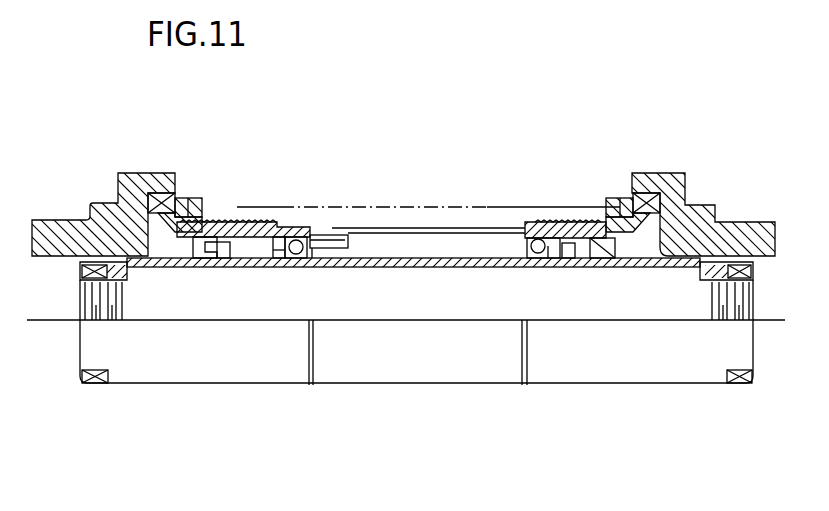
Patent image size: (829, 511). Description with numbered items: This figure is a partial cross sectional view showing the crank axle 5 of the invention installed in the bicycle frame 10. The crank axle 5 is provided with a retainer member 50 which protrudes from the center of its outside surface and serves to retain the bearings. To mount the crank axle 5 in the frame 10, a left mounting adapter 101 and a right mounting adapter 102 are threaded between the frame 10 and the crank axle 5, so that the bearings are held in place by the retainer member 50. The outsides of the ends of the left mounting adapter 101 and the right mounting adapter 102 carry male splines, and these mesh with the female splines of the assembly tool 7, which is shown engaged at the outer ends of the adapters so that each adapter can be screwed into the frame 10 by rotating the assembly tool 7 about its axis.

The crank axle 5 is at (243, 383).
The assembly tool 7 is at (745, 230).
The bicycle frame 10 is at (411, 213).
The retainer member 50 is at (310, 387).
The left mounting adapter 101 is at (222, 226).
The right mounting adapter 102 is at (607, 217).